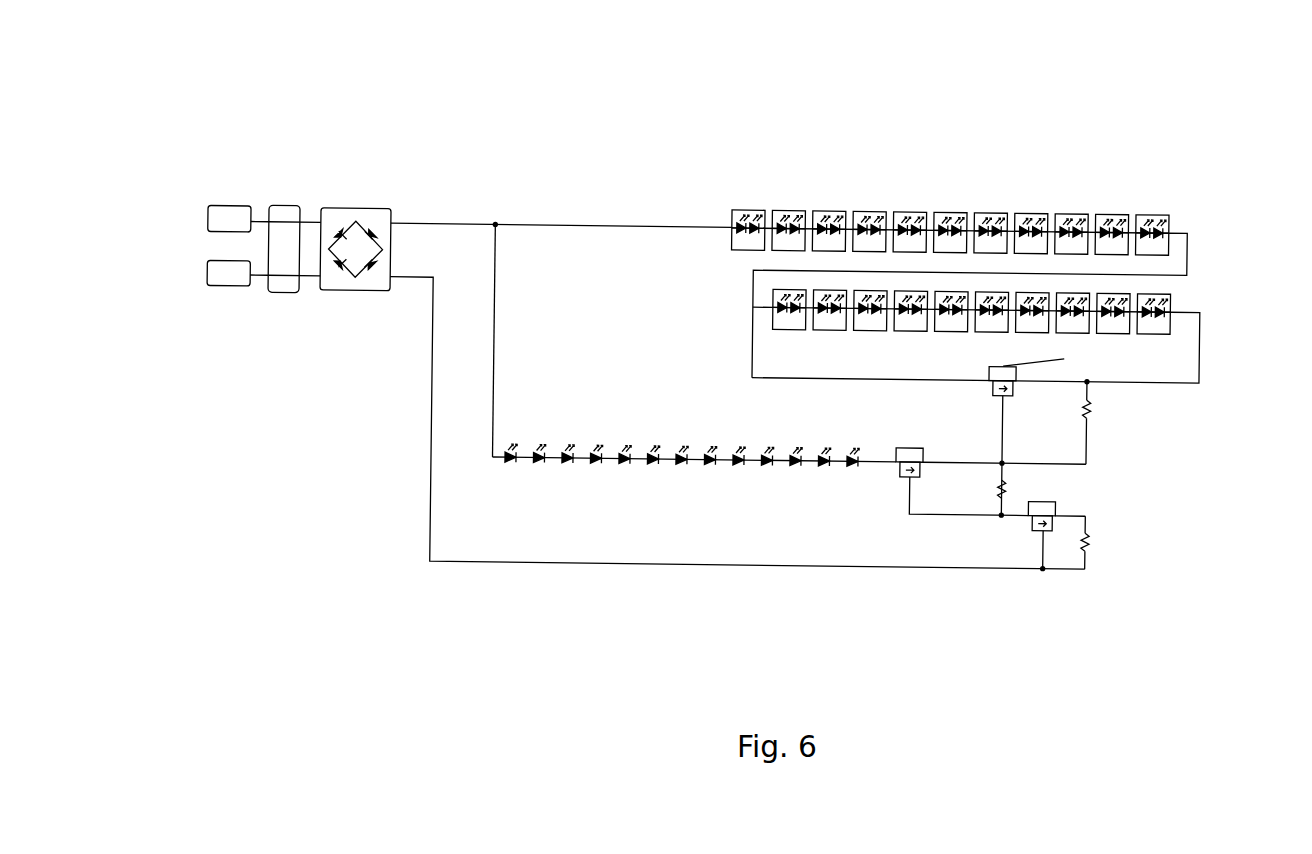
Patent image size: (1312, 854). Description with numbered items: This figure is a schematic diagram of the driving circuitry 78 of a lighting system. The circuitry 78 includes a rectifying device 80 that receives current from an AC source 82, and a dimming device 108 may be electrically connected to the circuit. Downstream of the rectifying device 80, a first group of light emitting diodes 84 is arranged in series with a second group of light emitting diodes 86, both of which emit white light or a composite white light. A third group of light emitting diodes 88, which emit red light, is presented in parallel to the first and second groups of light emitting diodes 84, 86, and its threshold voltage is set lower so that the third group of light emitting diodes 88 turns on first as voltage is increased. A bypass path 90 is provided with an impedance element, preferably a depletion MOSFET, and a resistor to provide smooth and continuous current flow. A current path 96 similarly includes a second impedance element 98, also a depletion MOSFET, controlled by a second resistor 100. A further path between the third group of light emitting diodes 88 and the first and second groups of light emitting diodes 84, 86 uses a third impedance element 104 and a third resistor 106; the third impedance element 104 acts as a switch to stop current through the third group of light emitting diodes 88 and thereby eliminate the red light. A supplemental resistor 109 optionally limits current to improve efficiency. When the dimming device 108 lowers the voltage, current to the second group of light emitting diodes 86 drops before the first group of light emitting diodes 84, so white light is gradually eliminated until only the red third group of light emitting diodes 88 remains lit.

The driving circuitry 78 is at (689, 154).
The rectifying device 80 is at (353, 210).
The AC source 82 is at (205, 162).
The first group of light emitting diodes 84 is at (1022, 161).
The second group of light emitting diodes 86 is at (1201, 294).
The third group of light emitting diodes 88 is at (711, 421).
The bypass path 90 is at (935, 415).
The current path 96 is at (1088, 408).
The second impedance element 98 is at (1046, 496).
The second resistor 100 is at (1088, 541).
The third impedance element 104 is at (905, 443).
The third resistor 106 is at (1000, 490).
The dimming device 108 is at (283, 208).
The supplemental resistor 109 is at (983, 452).